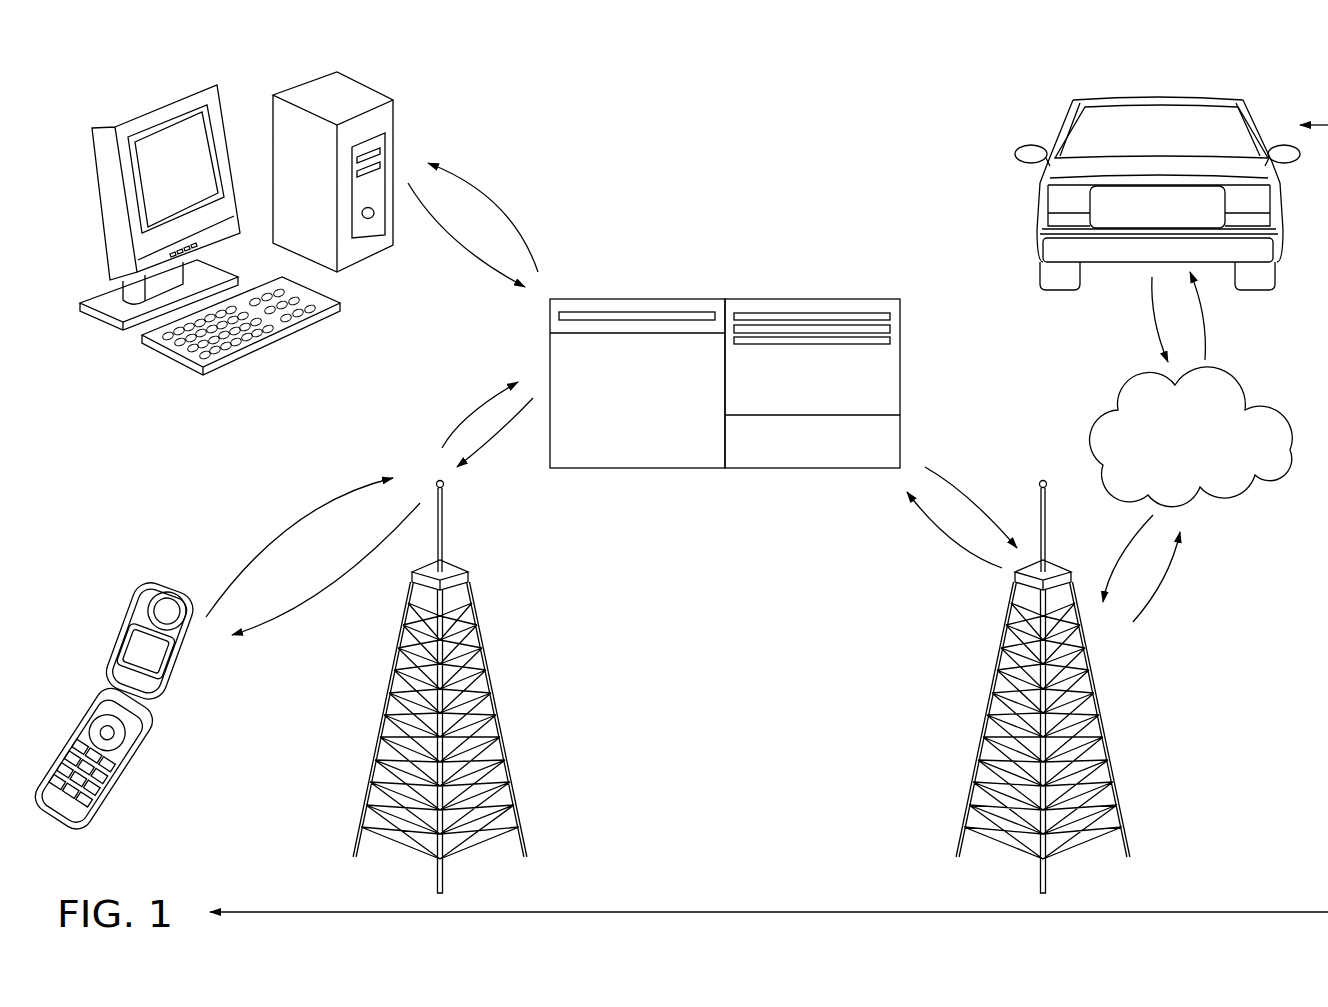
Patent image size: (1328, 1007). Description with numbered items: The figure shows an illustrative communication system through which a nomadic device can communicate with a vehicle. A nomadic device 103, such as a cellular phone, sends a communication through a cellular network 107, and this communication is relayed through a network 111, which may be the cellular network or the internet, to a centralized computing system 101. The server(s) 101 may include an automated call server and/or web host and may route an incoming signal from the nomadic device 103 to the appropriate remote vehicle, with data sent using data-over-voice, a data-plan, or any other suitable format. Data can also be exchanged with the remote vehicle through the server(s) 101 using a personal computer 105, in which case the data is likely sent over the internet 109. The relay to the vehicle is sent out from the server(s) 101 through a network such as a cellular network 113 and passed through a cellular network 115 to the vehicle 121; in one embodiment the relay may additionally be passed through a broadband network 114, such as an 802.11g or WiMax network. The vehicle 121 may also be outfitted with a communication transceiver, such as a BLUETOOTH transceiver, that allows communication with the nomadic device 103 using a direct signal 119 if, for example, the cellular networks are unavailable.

The centralized computing system 101 is at (633, 468).
The nomadic device 103 is at (137, 615).
The personal computer 105 is at (150, 107).
The cellular network 107 is at (296, 528).
The internet 109 is at (493, 205).
The network 111 is at (468, 413).
The cellular network 113 is at (950, 538).
The broadband network 114 is at (1245, 393).
The cellular network 115 is at (1203, 310).
The direct signal 119 is at (765, 912).
The vehicle 121 is at (1143, 95).